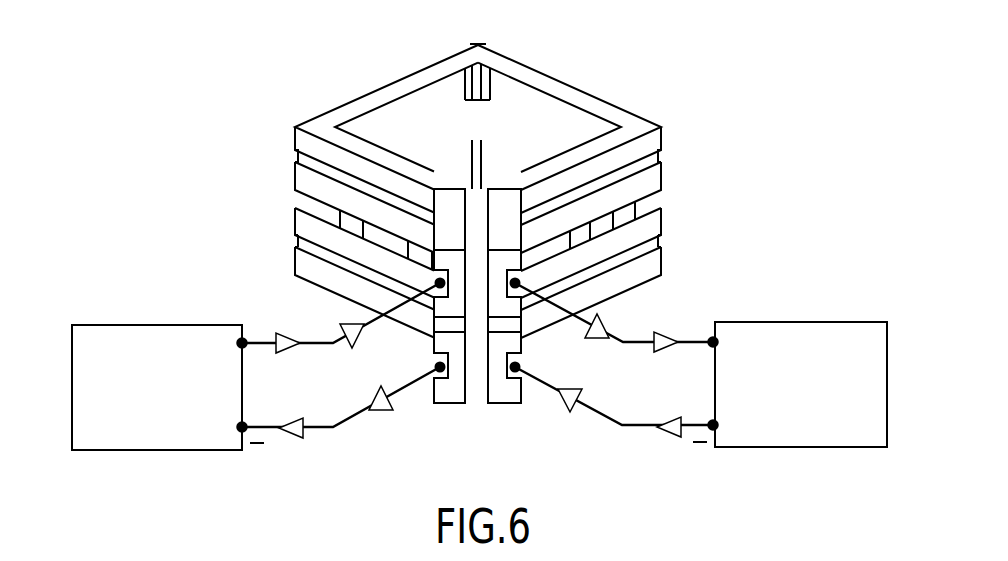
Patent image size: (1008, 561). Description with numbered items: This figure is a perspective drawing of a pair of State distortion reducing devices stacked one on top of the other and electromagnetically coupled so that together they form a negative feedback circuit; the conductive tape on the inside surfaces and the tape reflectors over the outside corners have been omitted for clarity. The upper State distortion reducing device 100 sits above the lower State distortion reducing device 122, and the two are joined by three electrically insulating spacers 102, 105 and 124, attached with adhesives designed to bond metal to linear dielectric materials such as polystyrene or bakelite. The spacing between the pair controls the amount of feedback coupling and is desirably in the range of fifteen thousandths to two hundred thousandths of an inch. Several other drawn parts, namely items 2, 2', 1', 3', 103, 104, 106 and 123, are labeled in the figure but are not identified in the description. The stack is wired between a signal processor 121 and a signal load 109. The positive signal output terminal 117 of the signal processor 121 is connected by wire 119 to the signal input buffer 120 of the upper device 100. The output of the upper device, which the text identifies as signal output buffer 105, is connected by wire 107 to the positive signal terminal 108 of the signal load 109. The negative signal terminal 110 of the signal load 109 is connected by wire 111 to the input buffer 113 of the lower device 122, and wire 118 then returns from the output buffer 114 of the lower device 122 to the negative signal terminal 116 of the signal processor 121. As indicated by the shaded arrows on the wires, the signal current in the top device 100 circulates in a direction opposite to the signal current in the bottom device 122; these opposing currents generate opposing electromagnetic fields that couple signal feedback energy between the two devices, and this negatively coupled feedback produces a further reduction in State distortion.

The magnetic core 2 is at (468, 22).
The center post 2' is at (466, 164).
The core ring layer 1' is at (617, 216).
The core ring layer 3' is at (320, 216).
The State distortion reducing device 100 is at (541, 56).
The electrically insulating spacer 102 is at (462, 100).
The left column 103 is at (446, 182).
The right column 104 is at (506, 168).
The electrically insulating spacer 105 is at (616, 214).
The ring layer 106 is at (526, 264).
The wire 107 is at (656, 163).
The positive signal terminal 108 is at (729, 339).
The signal load 109 is at (838, 319).
The negative signal terminal 110 is at (731, 430).
The wire 111 is at (611, 424).
The input buffer 113 is at (523, 345).
The output buffer 114 is at (433, 345).
The negative signal terminal 116 is at (240, 429).
The positive signal output terminal 117 is at (253, 350).
The wire 118 is at (351, 427).
The wire 119 is at (379, 308).
The signal input buffer 120 is at (433, 263).
The signal processor 121 is at (144, 324).
The State distortion reducing device 122 is at (290, 223).
The spacer plate 123 is at (290, 243).
The electrically insulating spacer 124 is at (343, 217).